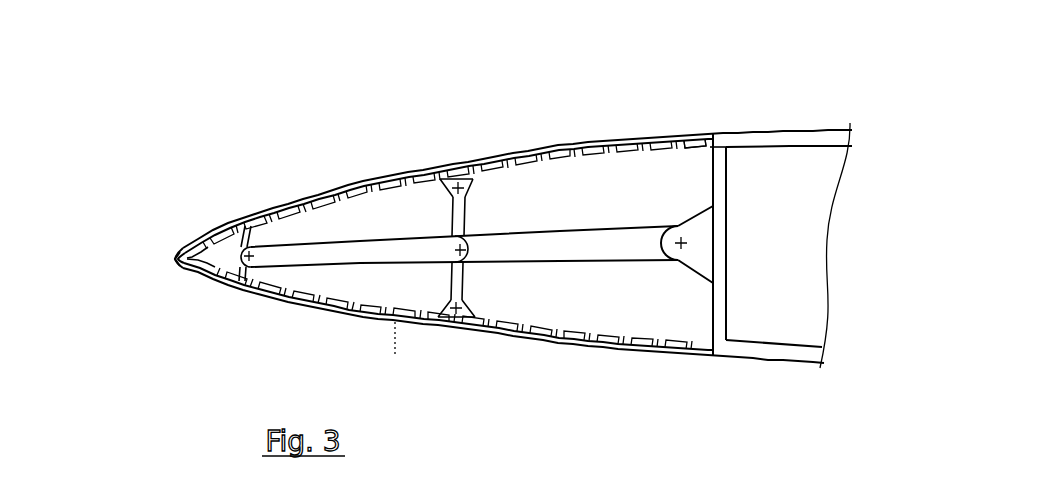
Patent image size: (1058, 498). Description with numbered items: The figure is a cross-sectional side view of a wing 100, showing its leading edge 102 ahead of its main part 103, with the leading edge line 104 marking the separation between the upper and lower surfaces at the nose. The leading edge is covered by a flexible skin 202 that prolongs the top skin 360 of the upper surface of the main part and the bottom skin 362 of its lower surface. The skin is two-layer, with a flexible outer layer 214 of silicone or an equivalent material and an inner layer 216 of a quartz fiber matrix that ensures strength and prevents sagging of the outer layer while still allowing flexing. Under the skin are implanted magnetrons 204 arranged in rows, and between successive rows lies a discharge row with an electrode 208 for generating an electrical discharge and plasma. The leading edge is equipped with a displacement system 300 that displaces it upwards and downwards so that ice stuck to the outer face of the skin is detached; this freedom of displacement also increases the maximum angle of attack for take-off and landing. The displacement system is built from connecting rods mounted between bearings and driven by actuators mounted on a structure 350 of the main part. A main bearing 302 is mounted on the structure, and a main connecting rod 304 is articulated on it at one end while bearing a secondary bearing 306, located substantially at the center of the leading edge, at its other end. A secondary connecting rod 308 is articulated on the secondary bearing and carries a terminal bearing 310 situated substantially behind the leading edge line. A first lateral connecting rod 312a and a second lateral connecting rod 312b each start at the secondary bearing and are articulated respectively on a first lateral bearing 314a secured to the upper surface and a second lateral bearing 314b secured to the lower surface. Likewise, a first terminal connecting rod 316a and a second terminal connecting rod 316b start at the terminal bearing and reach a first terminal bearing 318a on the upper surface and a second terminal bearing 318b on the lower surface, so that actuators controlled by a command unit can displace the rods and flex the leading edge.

The wing 100 is at (207, 82).
The leading edge 102 is at (307, 69).
The main part 103 is at (919, 26).
The leading edge line 104 is at (173, 262).
The skin 202 is at (653, 103).
The magnetron 204 is at (687, 160).
The electrode 208 is at (662, 353).
The outer layer 214 is at (713, 135).
The inner layer 216 is at (727, 148).
The displacement system 300 is at (185, 421).
The main bearing 302 is at (683, 244).
The main connecting rod 304 is at (570, 243).
The secondary bearing 306 is at (472, 253).
The secondary connecting rod 308 is at (335, 265).
The terminal bearing 310 is at (296, 245).
The first lateral connecting rod 312a is at (460, 210).
The second lateral connecting rod 312b is at (455, 280).
The first lateral bearing 314a is at (472, 177).
The second lateral bearing 314b is at (467, 313).
The first terminal connecting rod 316a is at (190, 243).
The second terminal connecting rod 316b is at (212, 285).
The first terminal bearing 318a is at (243, 222).
The second terminal bearing 318b is at (243, 288).
The structure 350 is at (720, 322).
The top skin 360 is at (840, 138).
The bottom skin 362 is at (792, 355).